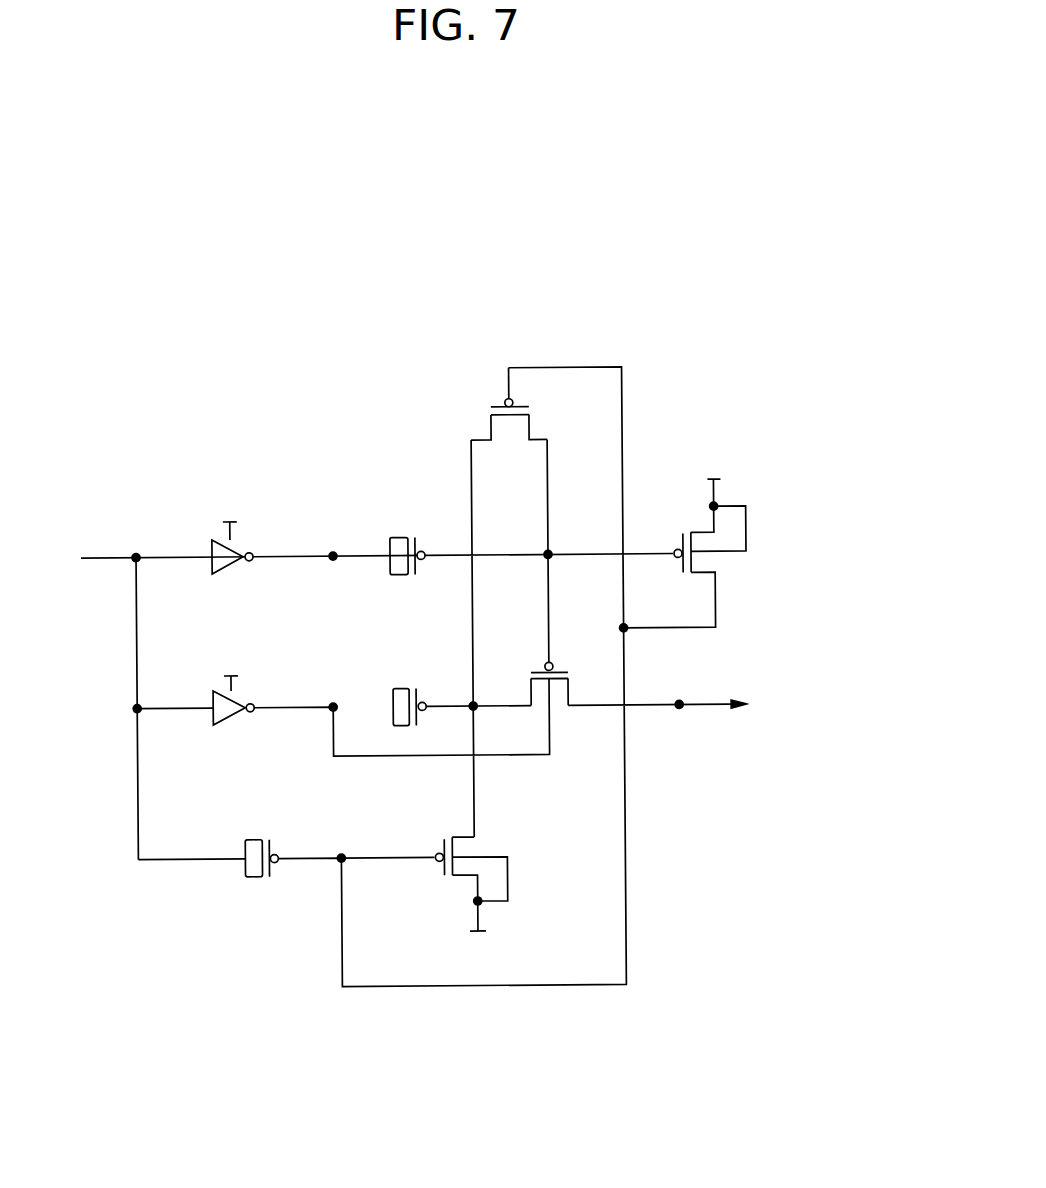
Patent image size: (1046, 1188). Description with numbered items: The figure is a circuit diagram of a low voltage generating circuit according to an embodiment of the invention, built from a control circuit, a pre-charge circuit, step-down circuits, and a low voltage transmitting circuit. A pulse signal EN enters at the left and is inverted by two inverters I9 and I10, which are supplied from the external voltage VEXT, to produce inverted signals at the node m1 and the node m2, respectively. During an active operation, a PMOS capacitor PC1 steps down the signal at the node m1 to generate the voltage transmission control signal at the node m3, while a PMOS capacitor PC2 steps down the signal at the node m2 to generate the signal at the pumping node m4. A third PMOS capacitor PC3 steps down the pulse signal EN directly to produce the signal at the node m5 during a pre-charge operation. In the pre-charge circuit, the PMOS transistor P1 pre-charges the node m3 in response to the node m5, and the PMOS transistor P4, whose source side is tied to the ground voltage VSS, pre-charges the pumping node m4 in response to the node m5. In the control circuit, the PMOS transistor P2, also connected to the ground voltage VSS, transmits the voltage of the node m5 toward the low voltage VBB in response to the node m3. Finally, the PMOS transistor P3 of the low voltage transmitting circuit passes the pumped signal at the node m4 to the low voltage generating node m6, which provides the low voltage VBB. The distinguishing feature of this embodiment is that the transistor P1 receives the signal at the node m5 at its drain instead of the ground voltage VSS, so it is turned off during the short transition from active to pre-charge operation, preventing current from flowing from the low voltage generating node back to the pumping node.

The pulse signal EN is at (76, 550).
The inverter I9 is at (249, 551).
The inverter I10 is at (250, 702).
The external voltage VEXT is at (230, 587).
The node 1 m1 is at (334, 542).
The PMOS capacitor PC1 is at (401, 537).
The node 3 m3 is at (535, 542).
The PMOS transistor P1 is at (524, 420).
The PMOS transistor P2 is at (685, 567).
The ground voltage VSS is at (593, 707).
The node 2 m2 is at (333, 691).
The PMOS capacitor PC2 is at (402, 688).
The node 4 m4 is at (492, 693).
The PMOS transistor P3 is at (559, 700).
The low voltage generating node m6 is at (669, 691).
The low voltage VBB is at (765, 705).
The PMOS capacitor PC3 is at (260, 838).
The node 5 m5 is at (343, 843).
The PMOS transistor P4 is at (474, 866).